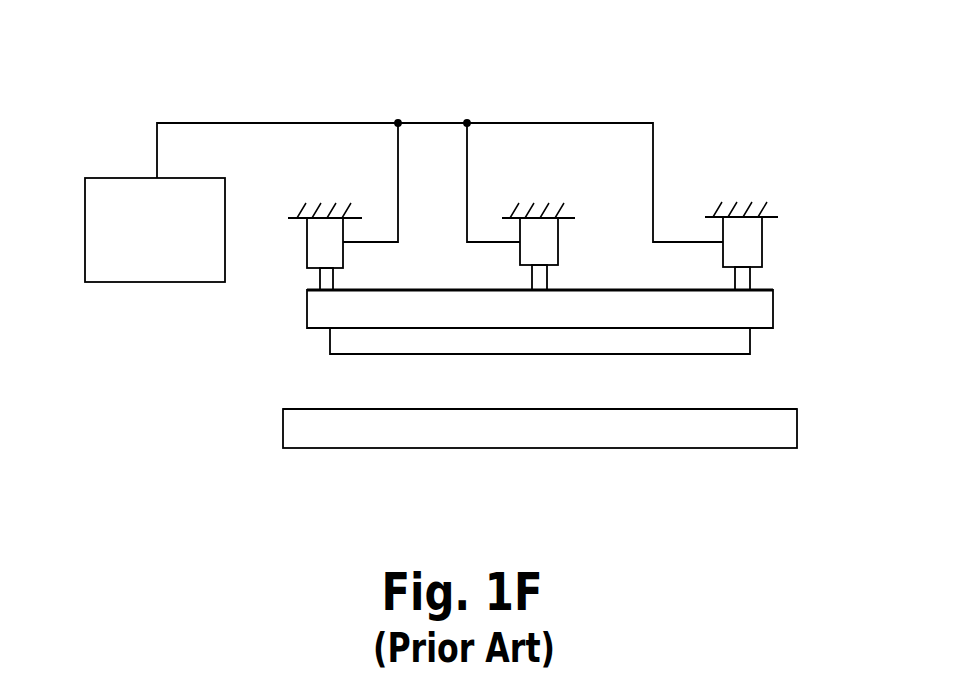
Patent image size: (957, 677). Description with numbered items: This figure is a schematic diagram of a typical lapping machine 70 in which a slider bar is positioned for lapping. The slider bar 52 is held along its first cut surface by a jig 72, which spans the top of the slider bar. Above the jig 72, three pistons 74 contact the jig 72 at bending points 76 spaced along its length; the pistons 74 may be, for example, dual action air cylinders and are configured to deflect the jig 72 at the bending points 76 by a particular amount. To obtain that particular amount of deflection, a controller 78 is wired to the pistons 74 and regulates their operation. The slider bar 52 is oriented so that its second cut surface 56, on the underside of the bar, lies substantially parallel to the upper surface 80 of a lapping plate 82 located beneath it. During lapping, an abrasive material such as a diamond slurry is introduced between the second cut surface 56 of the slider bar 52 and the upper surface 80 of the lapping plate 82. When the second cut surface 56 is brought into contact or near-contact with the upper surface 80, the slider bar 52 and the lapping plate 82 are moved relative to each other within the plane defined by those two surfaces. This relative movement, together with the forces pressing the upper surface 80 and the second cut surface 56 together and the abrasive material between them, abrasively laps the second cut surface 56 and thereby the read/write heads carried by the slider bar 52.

The lapping machine 70 is at (634, 84).
The controller 78 is at (163, 268).
The pistons 74 is at (307, 256).
The bending points 76 is at (338, 286).
The jig 72 is at (762, 304).
The slider bar 52 is at (738, 340).
The second cut surface 56 is at (710, 355).
The upper surface 80 is at (310, 408).
The lapping plate 82 is at (606, 433).